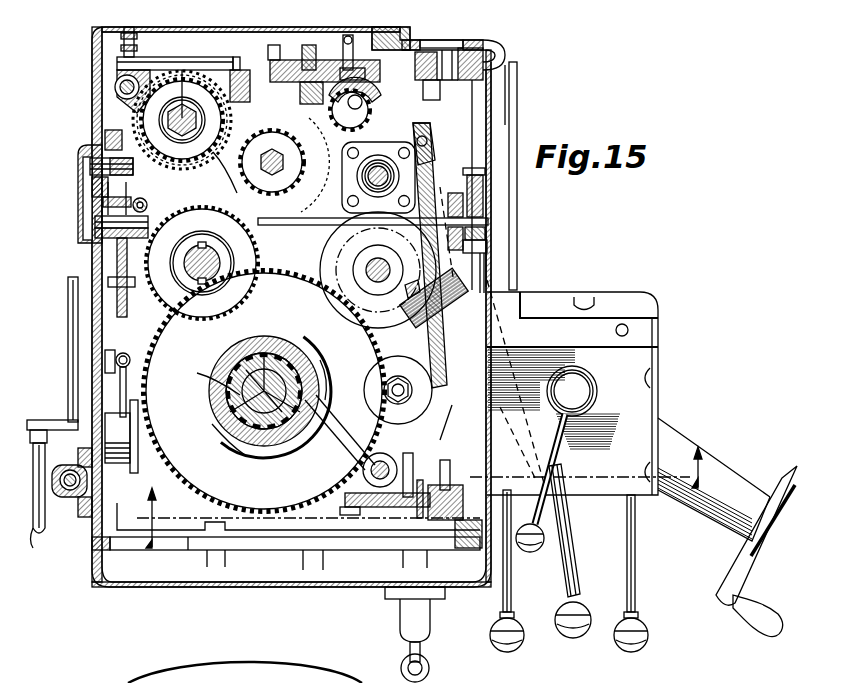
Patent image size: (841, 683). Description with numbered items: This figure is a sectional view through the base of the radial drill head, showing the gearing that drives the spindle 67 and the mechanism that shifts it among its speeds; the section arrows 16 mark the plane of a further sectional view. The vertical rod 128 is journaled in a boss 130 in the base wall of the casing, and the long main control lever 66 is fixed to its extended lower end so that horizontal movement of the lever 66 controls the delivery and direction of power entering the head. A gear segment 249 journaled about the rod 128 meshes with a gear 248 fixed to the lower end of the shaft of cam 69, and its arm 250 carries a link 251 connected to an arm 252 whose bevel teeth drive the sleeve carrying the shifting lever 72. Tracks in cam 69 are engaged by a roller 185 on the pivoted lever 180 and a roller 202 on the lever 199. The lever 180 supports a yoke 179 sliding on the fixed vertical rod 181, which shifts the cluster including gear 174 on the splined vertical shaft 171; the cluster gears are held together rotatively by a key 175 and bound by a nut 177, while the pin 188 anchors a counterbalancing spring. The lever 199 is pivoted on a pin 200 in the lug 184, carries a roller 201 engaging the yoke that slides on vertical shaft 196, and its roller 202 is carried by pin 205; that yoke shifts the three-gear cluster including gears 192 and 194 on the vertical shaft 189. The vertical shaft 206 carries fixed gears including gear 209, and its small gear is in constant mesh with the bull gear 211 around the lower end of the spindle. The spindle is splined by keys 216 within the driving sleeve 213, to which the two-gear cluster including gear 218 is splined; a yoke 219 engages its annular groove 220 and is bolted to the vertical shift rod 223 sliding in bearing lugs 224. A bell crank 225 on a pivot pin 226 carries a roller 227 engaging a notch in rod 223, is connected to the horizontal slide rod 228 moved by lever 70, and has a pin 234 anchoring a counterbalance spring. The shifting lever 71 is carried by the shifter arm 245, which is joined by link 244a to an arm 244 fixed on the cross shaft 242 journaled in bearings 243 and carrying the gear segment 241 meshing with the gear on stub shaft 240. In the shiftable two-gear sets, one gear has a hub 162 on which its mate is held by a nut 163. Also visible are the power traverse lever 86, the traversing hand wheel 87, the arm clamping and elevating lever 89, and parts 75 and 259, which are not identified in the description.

The section line 16 is at (435, 497).
The main control lever 66 is at (566, 566).
The spindle 67 is at (268, 355).
The cam 69 is at (372, 88).
The lever 70 is at (545, 537).
The lever 71 is at (508, 651).
The lever 72 is at (620, 650).
The panel 75 is at (587, 494).
The lever 86 is at (432, 672).
The hand wheel 87 is at (720, 592).
The lever 89 is at (41, 505).
The vertical rod 128 is at (390, 175).
The boss 130 is at (385, 152).
The hub 162 is at (70, 490).
The nut 163 is at (56, 500).
The vertical shaft 171 is at (185, 58).
The gear 174 is at (205, 175).
The key 175 is at (141, 198).
The nut 177 is at (235, 177).
The yoke 179 is at (125, 112).
The pivoted lever 180 is at (205, 60).
The fixed vertical rod 181 is at (114, 89).
The lug 184 is at (275, 88).
The roller 185 is at (273, 52).
The pin 188 is at (142, 62).
The vertical shaft 189 is at (270, 176).
The gear 192 is at (202, 263).
The gear 194 is at (294, 150).
The vertical shaft 196 is at (240, 150).
The lever 199 is at (345, 43).
The pin 200 is at (308, 50).
The roller 201 is at (296, 140).
The roller 202 is at (365, 75).
The pin 205 is at (380, 37).
The vertical shaft 206 is at (207, 245).
The gear 209 is at (252, 262).
The bull gear 211 is at (155, 335).
The driving sleeve 213 is at (300, 412).
The keys 216 is at (212, 424).
The gear 218 is at (197, 373).
The yoke 219 is at (338, 392).
The annular groove 220 is at (215, 348).
The vertical shift rod 223 is at (385, 392).
The plain bearing lugs 224 is at (397, 474).
The bell crank 225 is at (405, 505).
The pivot pin 226 is at (430, 547).
The roller 227 is at (350, 510).
The slide rod 228 is at (460, 470).
The pin 234 is at (345, 520).
The stub shaft 240 is at (84, 160).
The gear segment 241 is at (128, 326).
The shaft 242 is at (354, 270).
The bearings 243 is at (467, 243).
The arm 244 is at (482, 192).
The link 244a is at (486, 287).
The shifter arm 245 is at (467, 243).
The gear 248 is at (365, 105).
The gear segment 249 is at (340, 118).
The arm 250 is at (426, 127).
The link 251 is at (424, 160).
The arm 252 is at (462, 405).
The block 259 is at (112, 137).